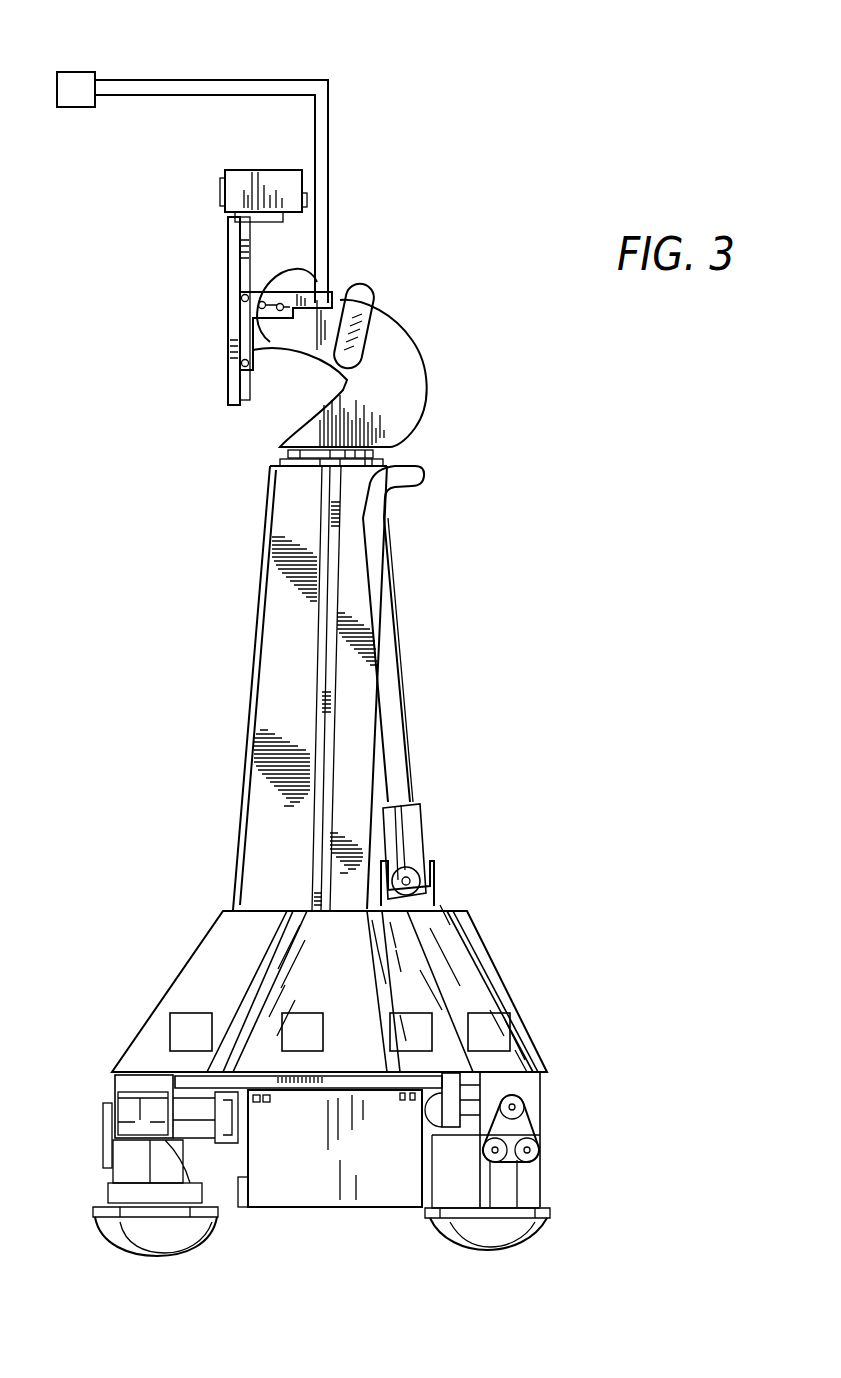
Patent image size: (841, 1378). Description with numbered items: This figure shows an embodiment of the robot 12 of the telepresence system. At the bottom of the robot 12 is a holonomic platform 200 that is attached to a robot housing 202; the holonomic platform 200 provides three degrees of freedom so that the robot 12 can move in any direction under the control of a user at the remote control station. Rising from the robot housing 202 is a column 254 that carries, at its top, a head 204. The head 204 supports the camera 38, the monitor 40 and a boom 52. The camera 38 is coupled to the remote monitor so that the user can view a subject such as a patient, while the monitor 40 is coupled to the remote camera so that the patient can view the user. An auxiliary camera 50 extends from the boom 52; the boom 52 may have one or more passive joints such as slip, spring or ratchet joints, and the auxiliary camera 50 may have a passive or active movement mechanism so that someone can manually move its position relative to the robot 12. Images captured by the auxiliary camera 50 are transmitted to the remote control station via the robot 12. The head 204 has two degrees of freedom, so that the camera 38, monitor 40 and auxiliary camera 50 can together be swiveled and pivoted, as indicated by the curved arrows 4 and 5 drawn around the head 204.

The auxiliary camera 50 is at (75, 73).
The boom 52 is at (172, 80).
The camera 38 is at (222, 185).
The monitor 40 is at (240, 300).
The tilt rotation arrow 5 is at (262, 350).
The head 204 is at (365, 265).
The pan rotation arrow 4 is at (237, 422).
The vertical column 254 is at (228, 646).
The robot housing 202 is at (167, 990).
The robot 12 is at (342, 1095).
The holonomic platform 200 is at (353, 1224).